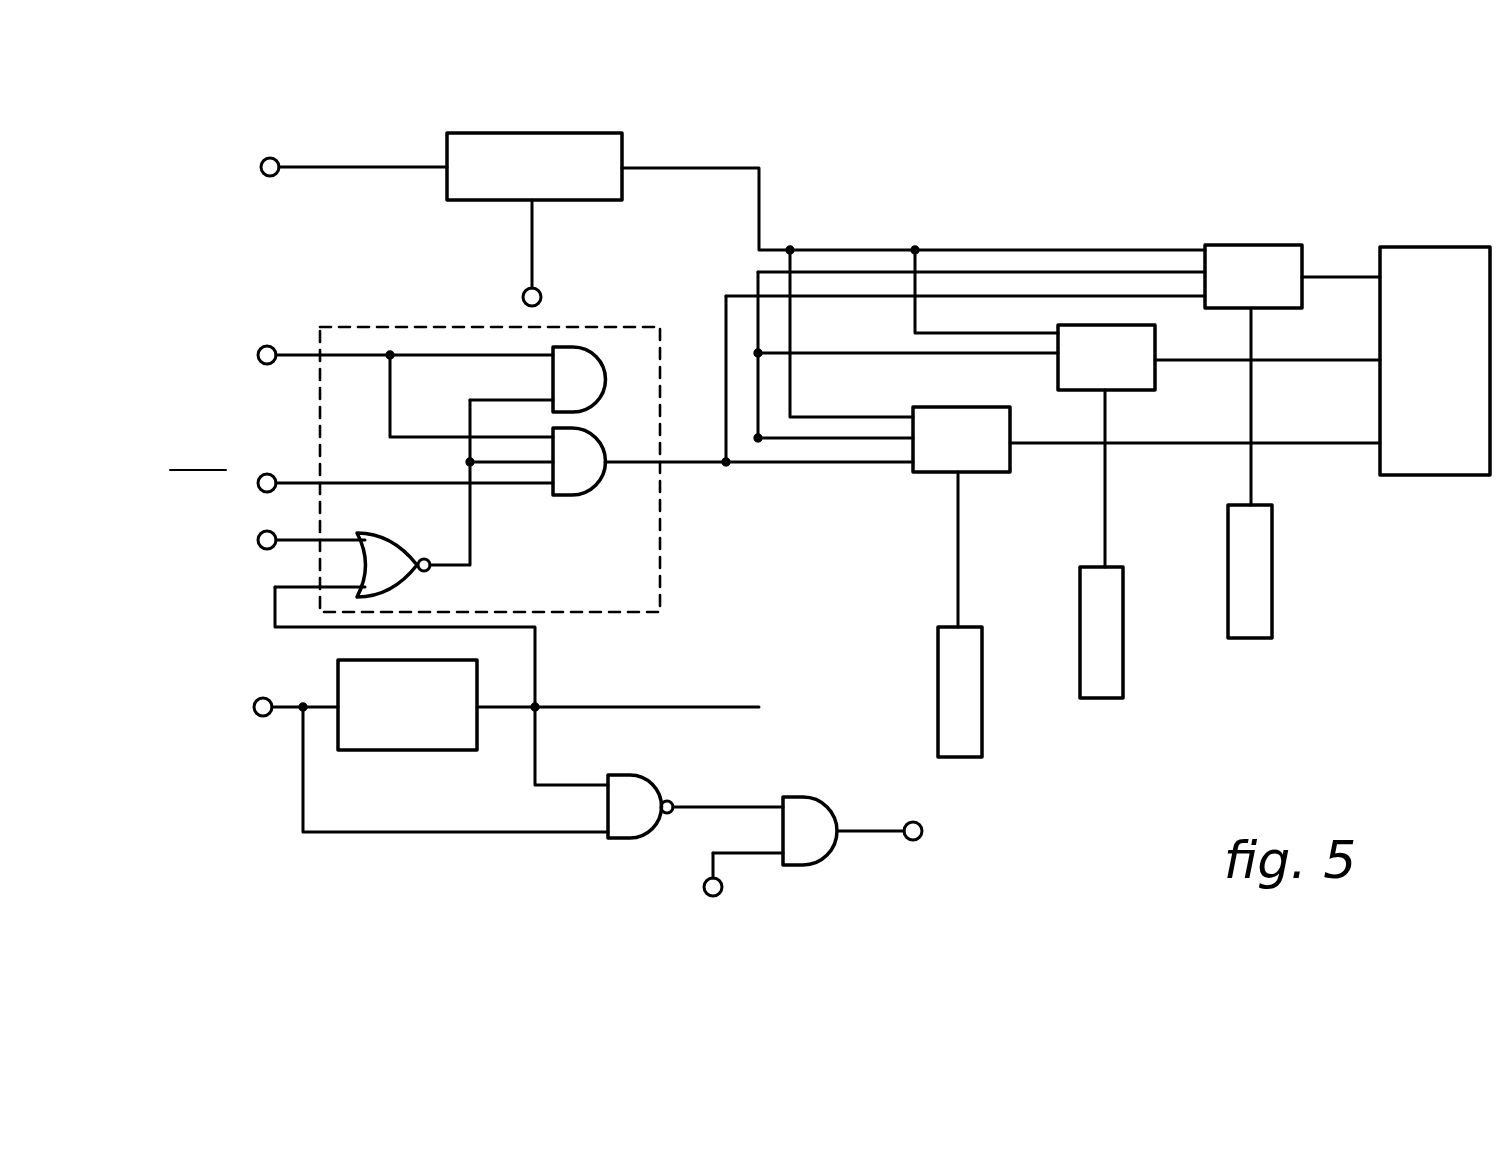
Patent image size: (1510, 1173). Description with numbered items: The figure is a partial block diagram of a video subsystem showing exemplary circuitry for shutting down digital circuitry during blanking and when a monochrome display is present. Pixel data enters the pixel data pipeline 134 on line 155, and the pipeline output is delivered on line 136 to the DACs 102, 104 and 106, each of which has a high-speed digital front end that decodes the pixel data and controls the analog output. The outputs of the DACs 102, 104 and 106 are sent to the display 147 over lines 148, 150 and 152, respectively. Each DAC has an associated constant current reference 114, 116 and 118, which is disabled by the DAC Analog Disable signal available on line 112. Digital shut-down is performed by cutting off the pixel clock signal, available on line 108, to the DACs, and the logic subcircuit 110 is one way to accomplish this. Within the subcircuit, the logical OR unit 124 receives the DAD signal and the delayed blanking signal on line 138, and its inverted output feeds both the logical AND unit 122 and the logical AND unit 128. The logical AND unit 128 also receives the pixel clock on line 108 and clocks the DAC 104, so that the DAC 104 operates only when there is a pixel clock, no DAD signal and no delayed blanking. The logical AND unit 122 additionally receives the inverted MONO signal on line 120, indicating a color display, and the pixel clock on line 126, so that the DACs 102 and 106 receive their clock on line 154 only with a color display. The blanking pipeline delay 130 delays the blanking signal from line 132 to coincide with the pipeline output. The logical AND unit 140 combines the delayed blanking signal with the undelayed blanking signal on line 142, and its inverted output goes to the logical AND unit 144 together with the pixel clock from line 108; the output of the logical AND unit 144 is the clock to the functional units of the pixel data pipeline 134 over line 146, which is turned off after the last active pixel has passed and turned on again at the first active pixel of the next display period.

The DAC 102 is at (1248, 245).
The DAC 104 is at (1155, 372).
The DAC 106 is at (1010, 462).
The pixel clock line 108 is at (318, 345).
The logic subcircuit 110 is at (660, 572).
The DAC Analog Disable line 112 is at (300, 540).
The constant current reference 114 is at (1272, 603).
The constant current reference 116 is at (1123, 648).
The constant current reference 118 is at (938, 660).
The inverted MONO signal line 120 is at (305, 480).
The logical AND unit 122 is at (585, 495).
The logical OR unit 124 is at (420, 593).
The pixel clock line 126 is at (433, 437).
The logical AND unit 128 is at (553, 380).
The blanking pipeline delay 130 is at (368, 750).
The blanking signal line 132 is at (283, 700).
The pixel data pipeline 134 is at (447, 152).
The pixel data pipeline output line 136 is at (760, 206).
The delayed blanking signal line 138 is at (535, 650).
The logical AND unit 140 is at (620, 840).
The undelayed blanking signal line 142 is at (303, 775).
The logical AND unit 144 is at (803, 797).
The pixel data pipeline clock line 146 is at (532, 246).
The display 147 is at (1438, 247).
The DAC output line 148 is at (1333, 277).
The DAC output line 150 is at (1310, 360).
The DAC output line 152 is at (1302, 443).
The clock line 154 is at (688, 464).
The pixel data input line 155 is at (365, 168).